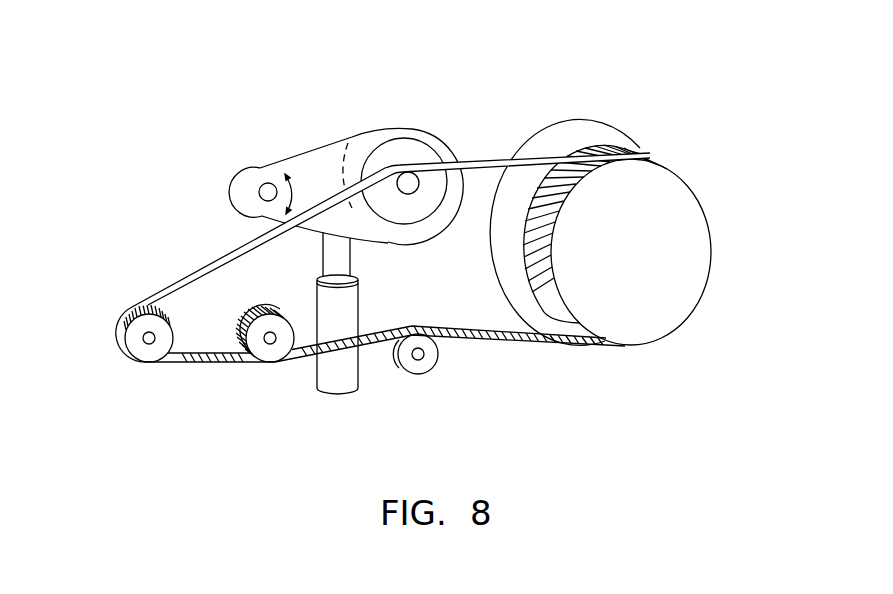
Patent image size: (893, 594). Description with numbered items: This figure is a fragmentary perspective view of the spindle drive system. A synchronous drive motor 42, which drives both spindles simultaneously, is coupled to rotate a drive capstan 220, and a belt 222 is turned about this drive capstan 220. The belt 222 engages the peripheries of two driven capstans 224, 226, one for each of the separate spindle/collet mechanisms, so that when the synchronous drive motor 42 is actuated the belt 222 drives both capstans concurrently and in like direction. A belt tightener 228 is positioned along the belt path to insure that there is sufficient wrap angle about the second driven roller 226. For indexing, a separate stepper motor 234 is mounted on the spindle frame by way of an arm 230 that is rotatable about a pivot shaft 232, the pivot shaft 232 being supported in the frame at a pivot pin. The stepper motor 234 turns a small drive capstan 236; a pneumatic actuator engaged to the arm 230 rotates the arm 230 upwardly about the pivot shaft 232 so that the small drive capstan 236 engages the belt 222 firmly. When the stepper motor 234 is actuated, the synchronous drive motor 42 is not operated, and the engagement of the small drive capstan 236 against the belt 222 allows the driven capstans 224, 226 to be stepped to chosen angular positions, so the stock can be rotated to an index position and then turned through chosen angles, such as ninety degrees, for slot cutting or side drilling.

The synchronous drive motor 42 is at (605, 123).
The drive capstan 220 is at (693, 190).
The belt 222 is at (538, 343).
The driven capstan 224 is at (133, 360).
The driven capstan 226 is at (270, 364).
The belt tightener 228 is at (425, 374).
The arm 230 is at (312, 150).
The pivot shaft 232 is at (263, 186).
The stepper motor 234 is at (397, 122).
The small drive capstan 236 is at (412, 186).